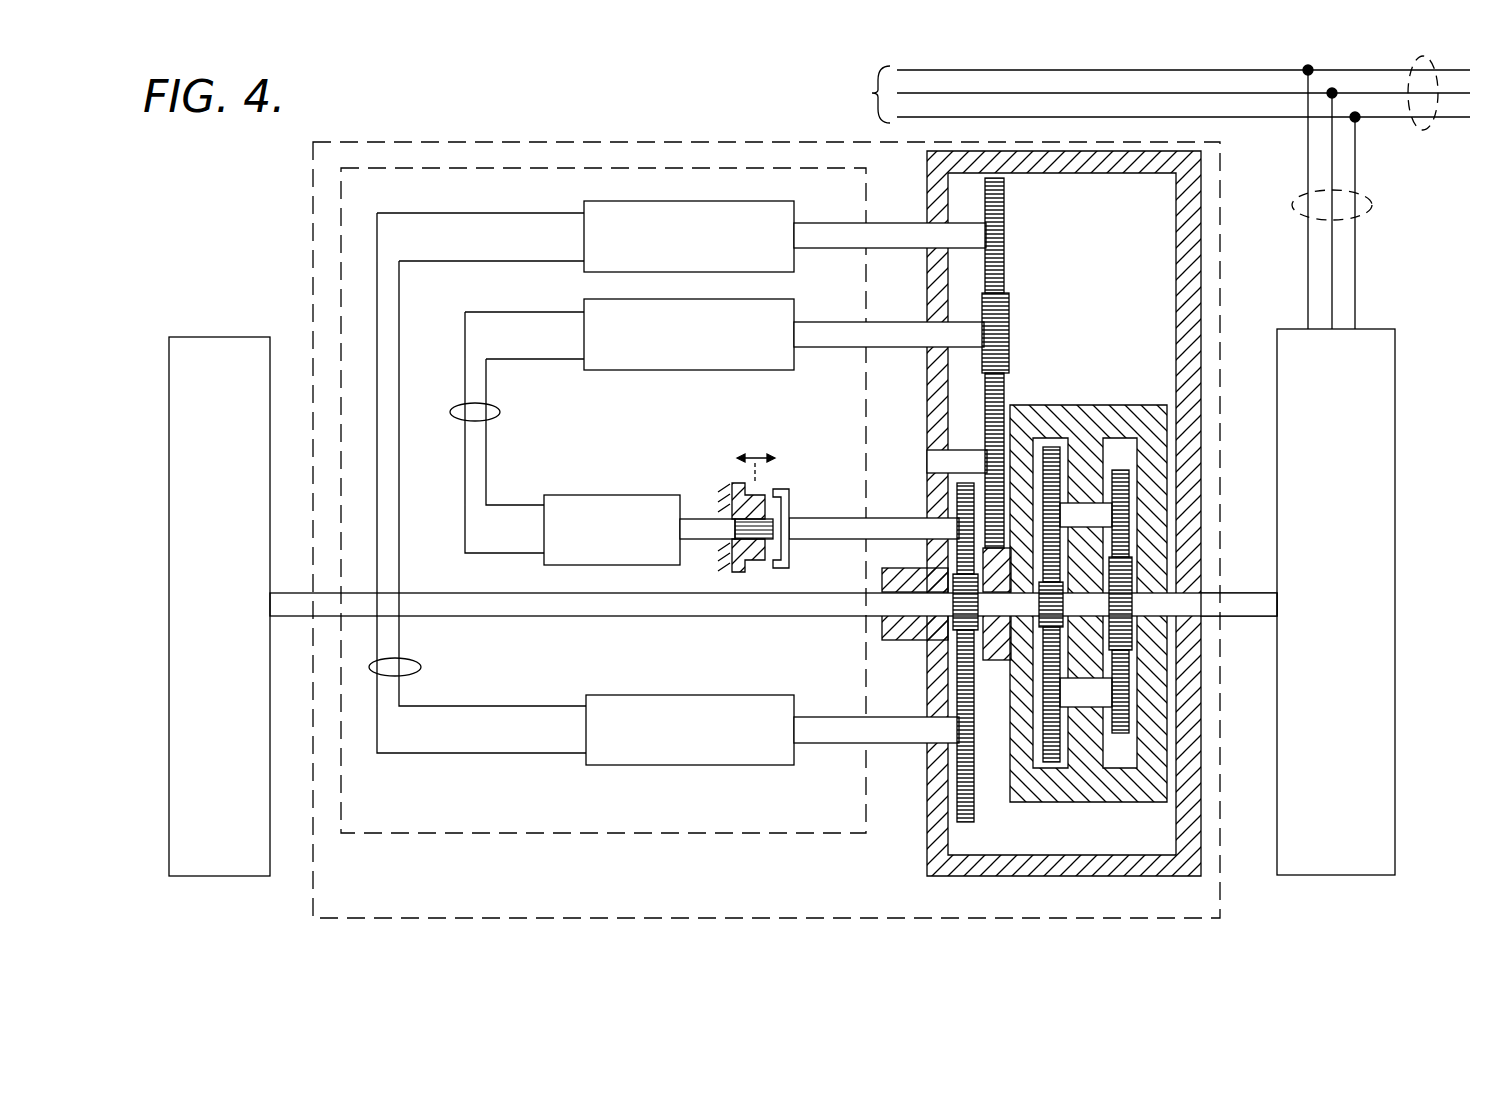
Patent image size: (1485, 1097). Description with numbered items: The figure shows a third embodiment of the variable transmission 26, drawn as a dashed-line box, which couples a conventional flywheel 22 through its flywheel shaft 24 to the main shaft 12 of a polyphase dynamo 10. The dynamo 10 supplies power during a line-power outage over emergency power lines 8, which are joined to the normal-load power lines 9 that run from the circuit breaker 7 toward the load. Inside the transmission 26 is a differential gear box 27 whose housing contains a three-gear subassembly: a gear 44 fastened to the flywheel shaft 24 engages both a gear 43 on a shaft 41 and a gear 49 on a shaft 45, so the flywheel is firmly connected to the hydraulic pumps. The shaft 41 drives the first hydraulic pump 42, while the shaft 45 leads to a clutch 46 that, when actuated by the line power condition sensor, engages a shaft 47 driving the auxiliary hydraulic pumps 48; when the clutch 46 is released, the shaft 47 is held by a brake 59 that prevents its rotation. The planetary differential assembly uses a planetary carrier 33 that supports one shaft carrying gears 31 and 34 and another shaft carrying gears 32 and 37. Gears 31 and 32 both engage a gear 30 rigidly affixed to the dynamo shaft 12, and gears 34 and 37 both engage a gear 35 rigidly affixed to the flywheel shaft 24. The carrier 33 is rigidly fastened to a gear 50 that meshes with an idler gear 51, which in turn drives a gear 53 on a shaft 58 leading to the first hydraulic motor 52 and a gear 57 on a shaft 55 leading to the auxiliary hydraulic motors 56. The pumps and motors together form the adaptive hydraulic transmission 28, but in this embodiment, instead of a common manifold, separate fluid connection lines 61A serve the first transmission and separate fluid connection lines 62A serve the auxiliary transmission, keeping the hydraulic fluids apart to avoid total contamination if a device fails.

The circuit breaker 7 is at (1141, 94).
The emergency power lines 8 is at (1370, 203).
The power lines 9 is at (1424, 130).
The polyphase dynamo 10 is at (1395, 400).
The main shaft 12 is at (1240, 593).
The flywheel 22 is at (215, 337).
The flywheel shaft 24 is at (548, 616).
The variable transmission 26 is at (655, 142).
The differential gear box 27 is at (930, 825).
The adaptive hydraulic transmission 28 is at (572, 833).
The gear 30 is at (1130, 648).
The gear 31 is at (1122, 470).
The gear 32 is at (1118, 733).
The planetary carrier 33 is at (1097, 405).
The gear 34 is at (1050, 447).
The gear 35 is at (1040, 627).
The gear 37 is at (1055, 762).
The shaft 41 is at (835, 745).
The first hydraulic pump 42 is at (665, 695).
The gear 43 is at (965, 785).
The gear 44 is at (950, 628).
The shaft 45 is at (835, 518).
The clutch 46 is at (789, 548).
The shaft 47 is at (700, 519).
The auxiliary hydraulic pumps 48 is at (565, 495).
The gear 49 is at (957, 493).
The gear 50 is at (965, 640).
The idler gear 51 is at (1004, 398).
The first hydraulic motor 52 is at (770, 201).
The gear 53 is at (1004, 197).
The shaft 55 is at (902, 336).
The auxiliary hydraulic motors 56 is at (656, 370).
The gear 57 is at (1009, 320).
The shaft 58 is at (903, 237).
The brake 59 is at (740, 483).
The fluid connection lines 61A is at (420, 665).
The fluid connection lines 62A is at (500, 410).